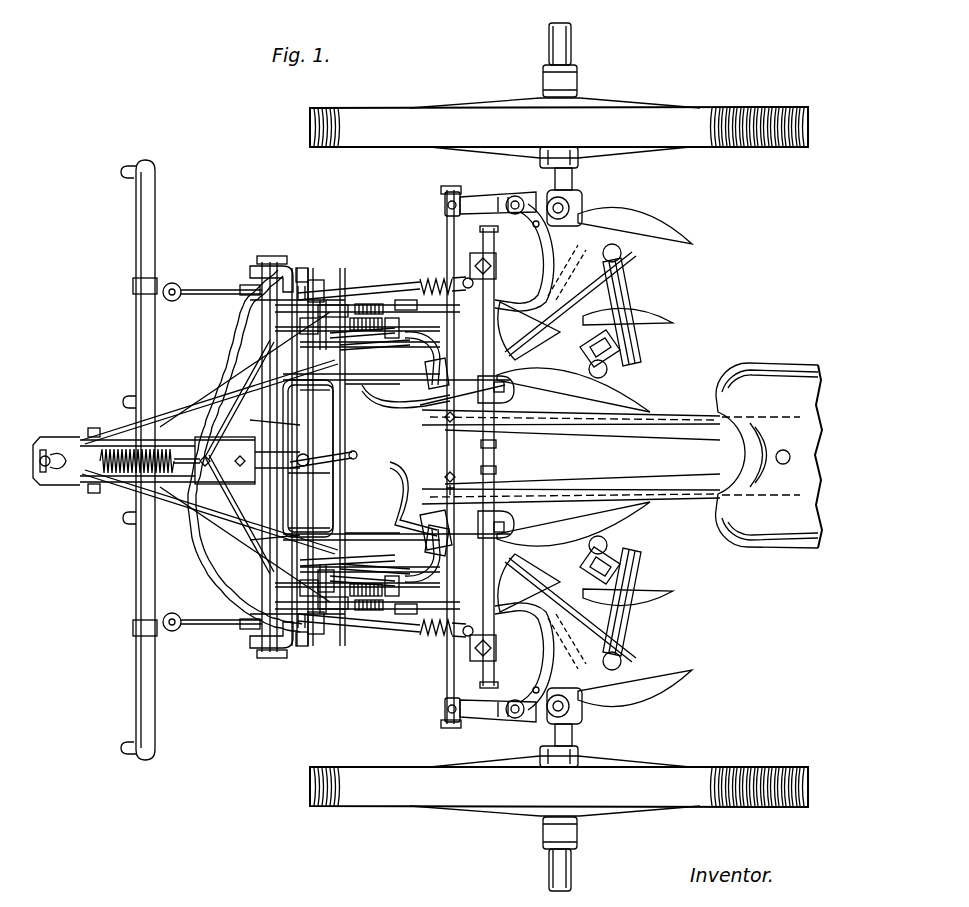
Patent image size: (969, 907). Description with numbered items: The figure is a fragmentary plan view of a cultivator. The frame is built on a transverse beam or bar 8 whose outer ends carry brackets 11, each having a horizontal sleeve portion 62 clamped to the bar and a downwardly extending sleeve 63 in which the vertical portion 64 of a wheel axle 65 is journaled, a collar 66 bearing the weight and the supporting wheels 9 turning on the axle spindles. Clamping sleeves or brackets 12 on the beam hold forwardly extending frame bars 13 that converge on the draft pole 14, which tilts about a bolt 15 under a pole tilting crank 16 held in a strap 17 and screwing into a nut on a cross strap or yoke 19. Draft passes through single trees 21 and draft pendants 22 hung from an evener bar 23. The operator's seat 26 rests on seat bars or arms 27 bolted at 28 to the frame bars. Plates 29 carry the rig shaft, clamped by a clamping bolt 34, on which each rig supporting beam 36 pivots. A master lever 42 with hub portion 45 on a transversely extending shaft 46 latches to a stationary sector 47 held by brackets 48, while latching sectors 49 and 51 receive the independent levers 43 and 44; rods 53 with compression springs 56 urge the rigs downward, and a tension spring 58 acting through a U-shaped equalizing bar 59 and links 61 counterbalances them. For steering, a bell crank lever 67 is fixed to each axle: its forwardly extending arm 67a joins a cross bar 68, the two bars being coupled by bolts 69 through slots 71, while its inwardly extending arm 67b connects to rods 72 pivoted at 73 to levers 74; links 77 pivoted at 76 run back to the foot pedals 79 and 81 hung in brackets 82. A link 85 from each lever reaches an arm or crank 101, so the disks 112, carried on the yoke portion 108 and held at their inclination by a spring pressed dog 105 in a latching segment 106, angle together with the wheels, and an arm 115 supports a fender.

The transverse beam or bar 8 is at (496, 486).
The supporting wheels 9 is at (805, 109).
The brackets 11 is at (497, 232).
The clamping sleeves or brackets 12 is at (514, 388).
The frame bars 13 is at (375, 388).
The draft pole 14 is at (50, 438).
The bolt 15 is at (93, 428).
The pole tilting crank 16 is at (309, 478).
The strap 17 is at (246, 446).
The cross strap or yoke 19 is at (288, 518).
The single trees 21 is at (138, 345).
The draft pendants 22 is at (207, 290).
The evener bar 23 is at (262, 338).
The operator's seat 26 is at (790, 375).
The seat bars or arms 27 is at (705, 437).
The bolted connection of seat bars 28 is at (308, 458).
The plates 29 is at (262, 422).
The clamping bolt 34 is at (290, 365).
The rig supporting beam or bar 36 is at (318, 650).
The master lever 42 is at (350, 325).
The independent lever 43 is at (338, 305).
The independent lever 44 is at (318, 650).
The hub portion 45 is at (313, 398).
The transversely extending shaft 46 is at (320, 460).
The stationary sector 47 is at (285, 312).
The brackets 48 is at (300, 332).
The latching sector 49 is at (262, 290).
The latching sector 51 is at (318, 582).
The rods 53 is at (355, 318).
The compression spring 56 is at (392, 318).
The tension spring 58 is at (120, 478).
The U-shaped equalizing bar 59 is at (200, 548).
The links 61 is at (250, 285).
The horizontal sleeve portion 62 is at (430, 295).
The downwardly extending sleeve 63 is at (536, 722).
The vertical portion of wheel axle 64 is at (515, 197).
The wheel axle 65 is at (572, 30).
The collar 66 is at (568, 200).
The bell crank lever 67 is at (547, 195).
The forwardly extending arm 67a is at (440, 775).
The inwardly extending arm 67b is at (583, 250).
The cross bar 68 is at (447, 432).
The bolts 69 is at (445, 478).
The slots 71 is at (446, 490).
The rods 72 is at (385, 285).
The pivotal connection 73 is at (313, 280).
The levers 74 is at (302, 268).
The pivotal connection 76 is at (300, 286).
The links 77 is at (421, 452).
The foot pedal 79 is at (440, 408).
The foot pedal 81 is at (425, 520).
The brackets 82 is at (430, 397).
The link 85 is at (350, 285).
The arm or crank 101 is at (621, 253).
The spring pressed dog 105 is at (620, 349).
The latching segment 106 is at (607, 372).
The yoke portion 108 is at (628, 280).
The disks 112 is at (692, 245).
The arm 115 is at (396, 460).